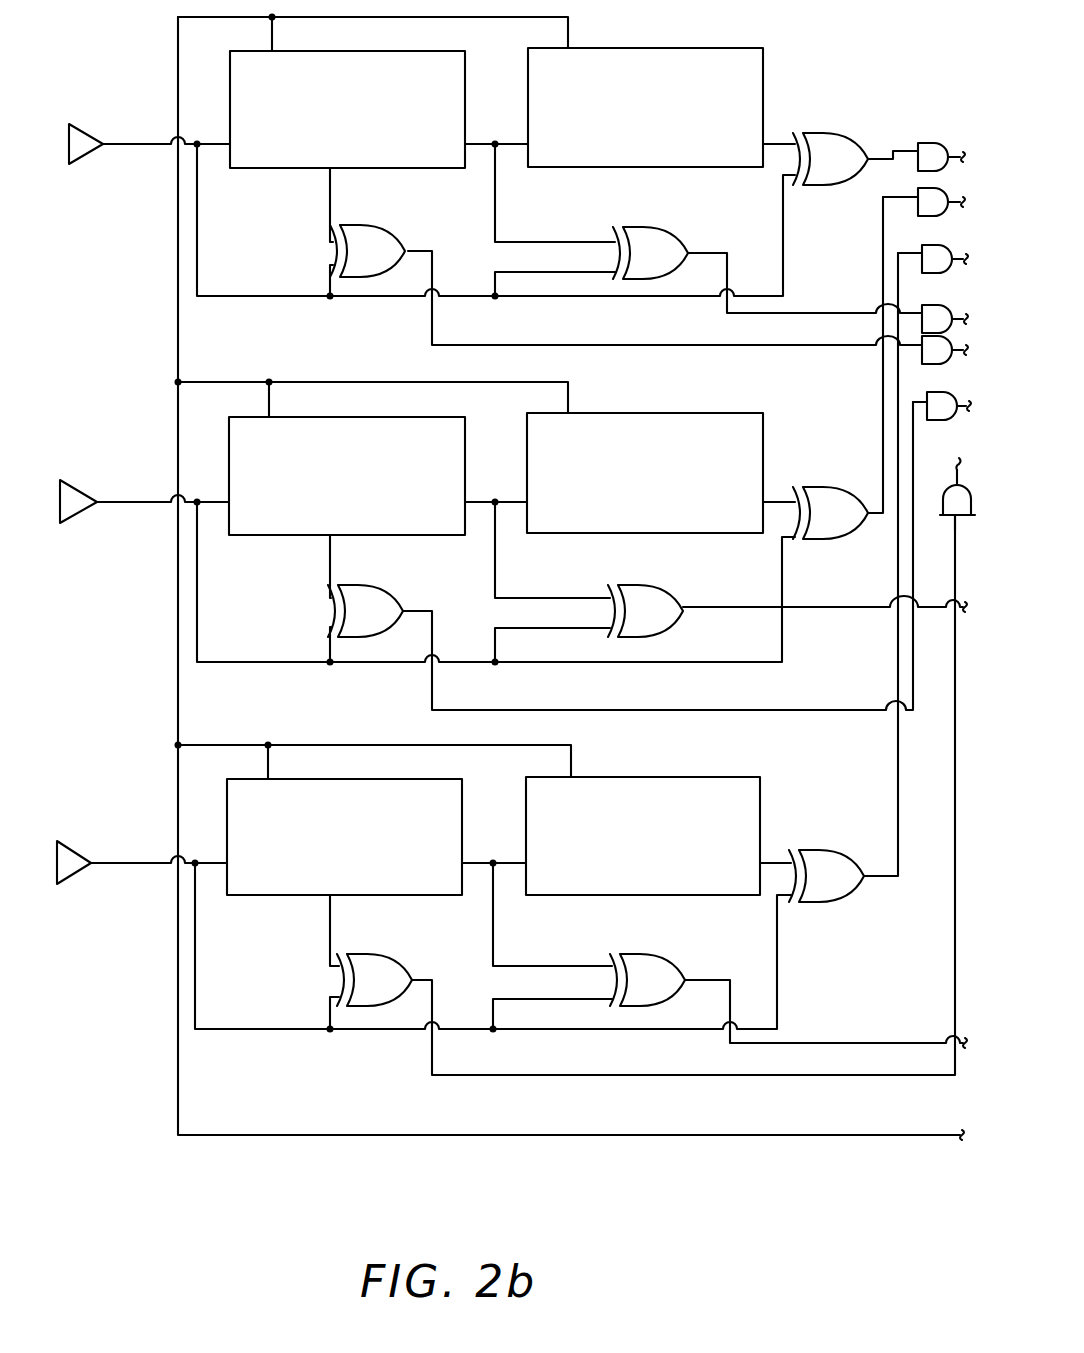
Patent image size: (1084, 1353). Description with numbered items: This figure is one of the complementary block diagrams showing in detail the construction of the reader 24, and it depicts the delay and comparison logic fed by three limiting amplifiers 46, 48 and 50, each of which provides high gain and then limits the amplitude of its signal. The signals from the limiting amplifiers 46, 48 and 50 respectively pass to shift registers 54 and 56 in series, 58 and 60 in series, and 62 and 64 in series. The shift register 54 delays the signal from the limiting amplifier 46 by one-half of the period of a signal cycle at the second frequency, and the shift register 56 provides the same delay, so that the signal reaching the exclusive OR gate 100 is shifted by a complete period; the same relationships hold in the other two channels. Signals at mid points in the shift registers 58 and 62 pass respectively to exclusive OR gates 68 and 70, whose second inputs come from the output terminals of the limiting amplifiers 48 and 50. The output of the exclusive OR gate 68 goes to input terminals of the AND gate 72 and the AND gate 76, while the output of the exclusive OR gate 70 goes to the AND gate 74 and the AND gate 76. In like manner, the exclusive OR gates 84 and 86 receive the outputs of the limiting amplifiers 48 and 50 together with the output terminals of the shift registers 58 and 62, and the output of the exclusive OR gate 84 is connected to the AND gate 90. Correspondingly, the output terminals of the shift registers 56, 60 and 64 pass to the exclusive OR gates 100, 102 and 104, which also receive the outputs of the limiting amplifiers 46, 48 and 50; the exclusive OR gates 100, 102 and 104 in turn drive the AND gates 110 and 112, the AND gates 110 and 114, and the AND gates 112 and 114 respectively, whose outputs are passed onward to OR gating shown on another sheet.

The reader 24 is at (826, 64).
The limiting amplifier 46 is at (84, 124).
The limiting amplifier 48 is at (79, 486).
The limiting amplifier 50 is at (88, 857).
The shift register 54 is at (412, 50).
The shift register 56 is at (665, 48).
The shift register 58 is at (358, 417).
The shift register 60 is at (620, 413).
The shift register 62 is at (390, 779).
The shift register 64 is at (658, 777).
The exclusive OR gate 68 is at (378, 585).
The exclusive OR gate 70 is at (380, 955).
The AND gate 72 is at (937, 364).
The AND gate 74 is at (943, 497).
The AND gate 76 is at (935, 423).
The exclusive OR gate 84 is at (655, 585).
The exclusive OR gate 86 is at (687, 945).
The AND gate 90 is at (935, 305).
The exclusive OR gate 100 is at (823, 132).
The exclusive OR gate 102 is at (825, 540).
The exclusive OR gate 104 is at (823, 850).
The AND gate 110 is at (928, 143).
The AND gate 112 is at (935, 247).
The AND gate 114 is at (928, 218).